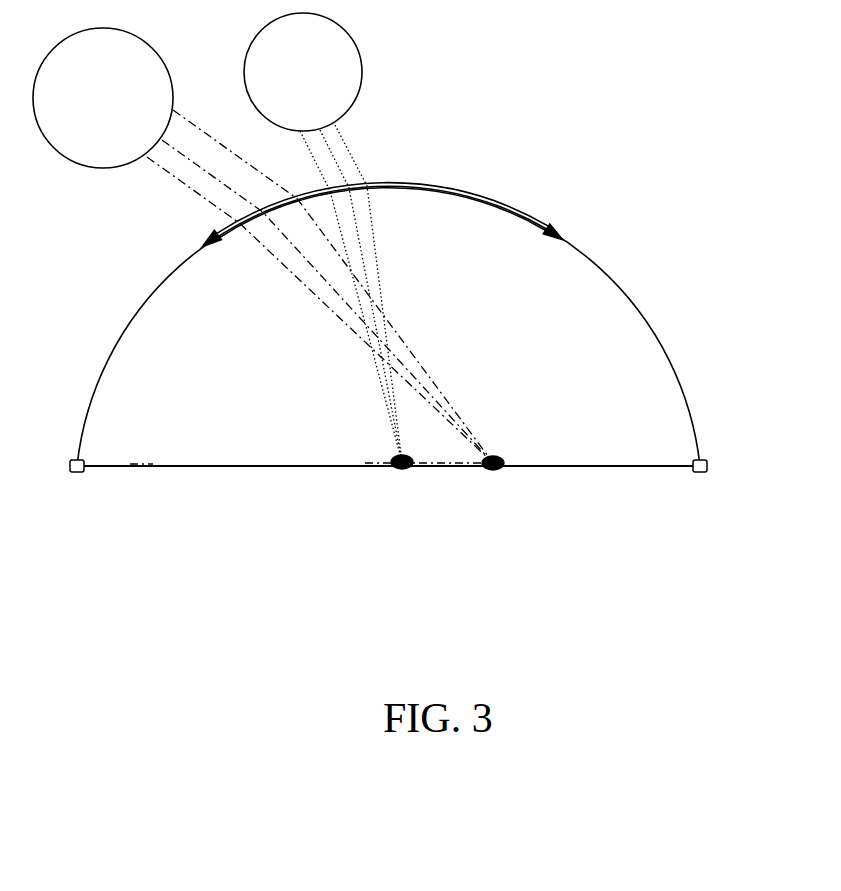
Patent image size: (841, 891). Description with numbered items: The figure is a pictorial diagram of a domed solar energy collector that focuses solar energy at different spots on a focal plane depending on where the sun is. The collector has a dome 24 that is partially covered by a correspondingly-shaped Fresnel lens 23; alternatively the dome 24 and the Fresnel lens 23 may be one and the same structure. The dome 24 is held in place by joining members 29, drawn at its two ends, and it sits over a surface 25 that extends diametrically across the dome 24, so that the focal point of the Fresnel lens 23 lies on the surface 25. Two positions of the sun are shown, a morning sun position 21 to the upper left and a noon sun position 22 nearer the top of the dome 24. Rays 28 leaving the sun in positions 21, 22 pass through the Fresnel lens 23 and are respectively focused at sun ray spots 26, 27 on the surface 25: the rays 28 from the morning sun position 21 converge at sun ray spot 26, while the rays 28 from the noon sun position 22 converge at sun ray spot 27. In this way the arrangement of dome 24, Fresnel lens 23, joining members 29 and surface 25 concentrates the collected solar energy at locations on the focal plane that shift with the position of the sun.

The sun position 21 is at (167, 65).
The sun position 22 is at (357, 43).
The Fresnel lens 23 is at (518, 208).
The dome 24 is at (148, 292).
The surface 25 is at (248, 467).
The sun ray spot 26 is at (493, 470).
The sun ray spot 27 is at (403, 470).
The rays 28 is at (293, 277).
The joining members 29 is at (77, 472).